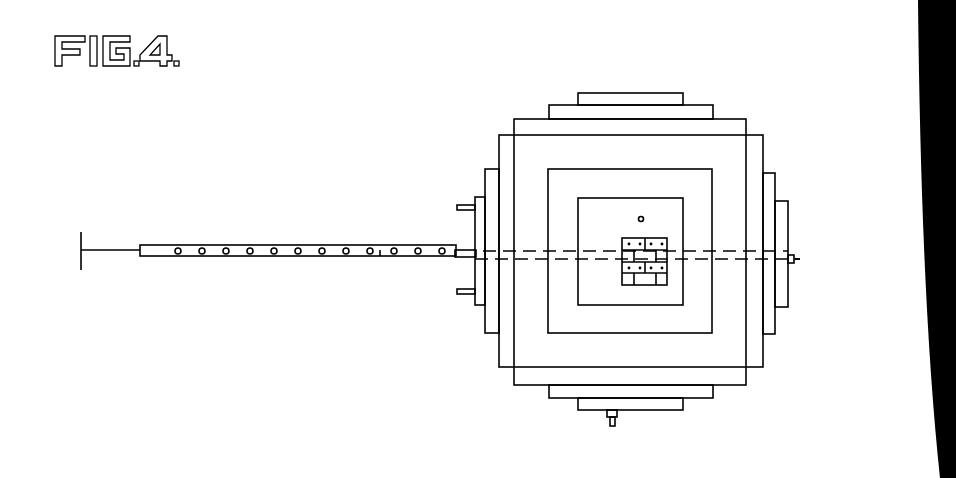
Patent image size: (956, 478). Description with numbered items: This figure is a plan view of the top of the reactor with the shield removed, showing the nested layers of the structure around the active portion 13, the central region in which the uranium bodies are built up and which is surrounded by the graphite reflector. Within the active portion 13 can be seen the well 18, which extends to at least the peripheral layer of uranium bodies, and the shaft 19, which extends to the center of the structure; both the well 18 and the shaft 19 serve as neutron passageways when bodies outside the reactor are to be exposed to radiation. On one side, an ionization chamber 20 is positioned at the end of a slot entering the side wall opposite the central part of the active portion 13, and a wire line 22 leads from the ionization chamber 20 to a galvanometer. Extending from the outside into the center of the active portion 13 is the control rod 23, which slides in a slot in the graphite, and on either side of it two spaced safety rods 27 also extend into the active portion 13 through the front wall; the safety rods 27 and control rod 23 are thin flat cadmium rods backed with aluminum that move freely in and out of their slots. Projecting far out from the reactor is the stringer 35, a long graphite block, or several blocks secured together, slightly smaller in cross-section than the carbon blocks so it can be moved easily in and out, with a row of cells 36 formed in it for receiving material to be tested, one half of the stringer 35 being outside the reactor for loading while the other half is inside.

The active portion 13 is at (504, 107).
The well 18 is at (621, 279).
The shaft 19 is at (638, 217).
The ionization chamber 20 is at (618, 418).
The wire line 22 is at (612, 428).
The control rod 23 is at (459, 248).
The safety rods 27 is at (463, 204).
The stringer 35 is at (378, 258).
The cells 36 is at (234, 247).